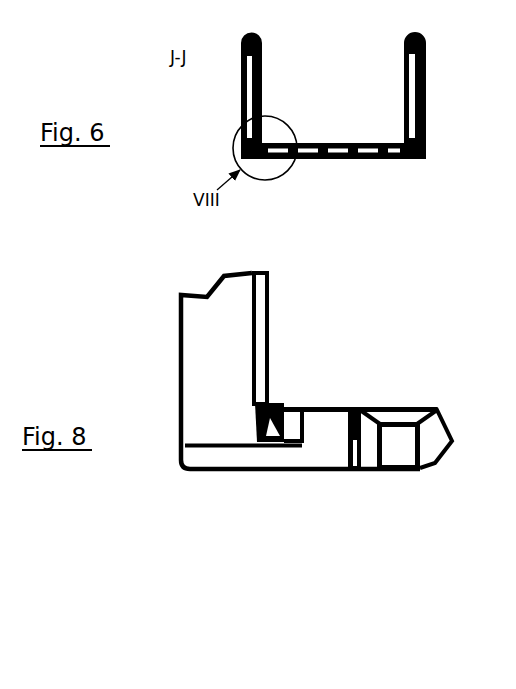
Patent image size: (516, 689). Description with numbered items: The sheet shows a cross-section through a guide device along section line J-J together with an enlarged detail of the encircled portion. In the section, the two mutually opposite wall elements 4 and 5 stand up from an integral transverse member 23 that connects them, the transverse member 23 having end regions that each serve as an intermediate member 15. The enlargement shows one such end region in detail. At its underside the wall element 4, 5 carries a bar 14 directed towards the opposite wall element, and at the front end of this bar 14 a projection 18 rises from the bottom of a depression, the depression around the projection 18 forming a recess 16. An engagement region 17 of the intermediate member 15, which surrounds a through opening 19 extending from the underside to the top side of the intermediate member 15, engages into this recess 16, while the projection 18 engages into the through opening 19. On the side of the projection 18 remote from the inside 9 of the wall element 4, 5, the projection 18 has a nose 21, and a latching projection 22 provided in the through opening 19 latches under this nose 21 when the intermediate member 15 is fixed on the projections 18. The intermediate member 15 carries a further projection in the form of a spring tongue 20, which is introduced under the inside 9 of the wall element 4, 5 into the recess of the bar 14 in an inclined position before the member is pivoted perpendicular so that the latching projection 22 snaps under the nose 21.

In FIG. 6, the wall element 4 is at (428, 110).
In FIG. 6, the wall element 5 is at (238, 112).
In FIG. 8, the wall element 5 is at (172, 353).
In FIG. 6, the transverse member 23 is at (342, 163).
In FIG. 8, the inside of the wall element 9 is at (270, 345).
In FIG. 8, the bar 14 is at (258, 474).
In FIG. 8, the intermediate member 15 is at (362, 468).
In FIG. 8, the recess 16 is at (260, 423).
In FIG. 8, the engagement region 17 is at (291, 430).
In FIG. 8, the projection 18 is at (333, 417).
In FIG. 8, the through opening 19 is at (354, 467).
In FIG. 8, the spring tongue 20 is at (267, 427).
In FIG. 8, the nose 21 is at (360, 412).
In FIG. 8, the latching projection 22 is at (398, 407).